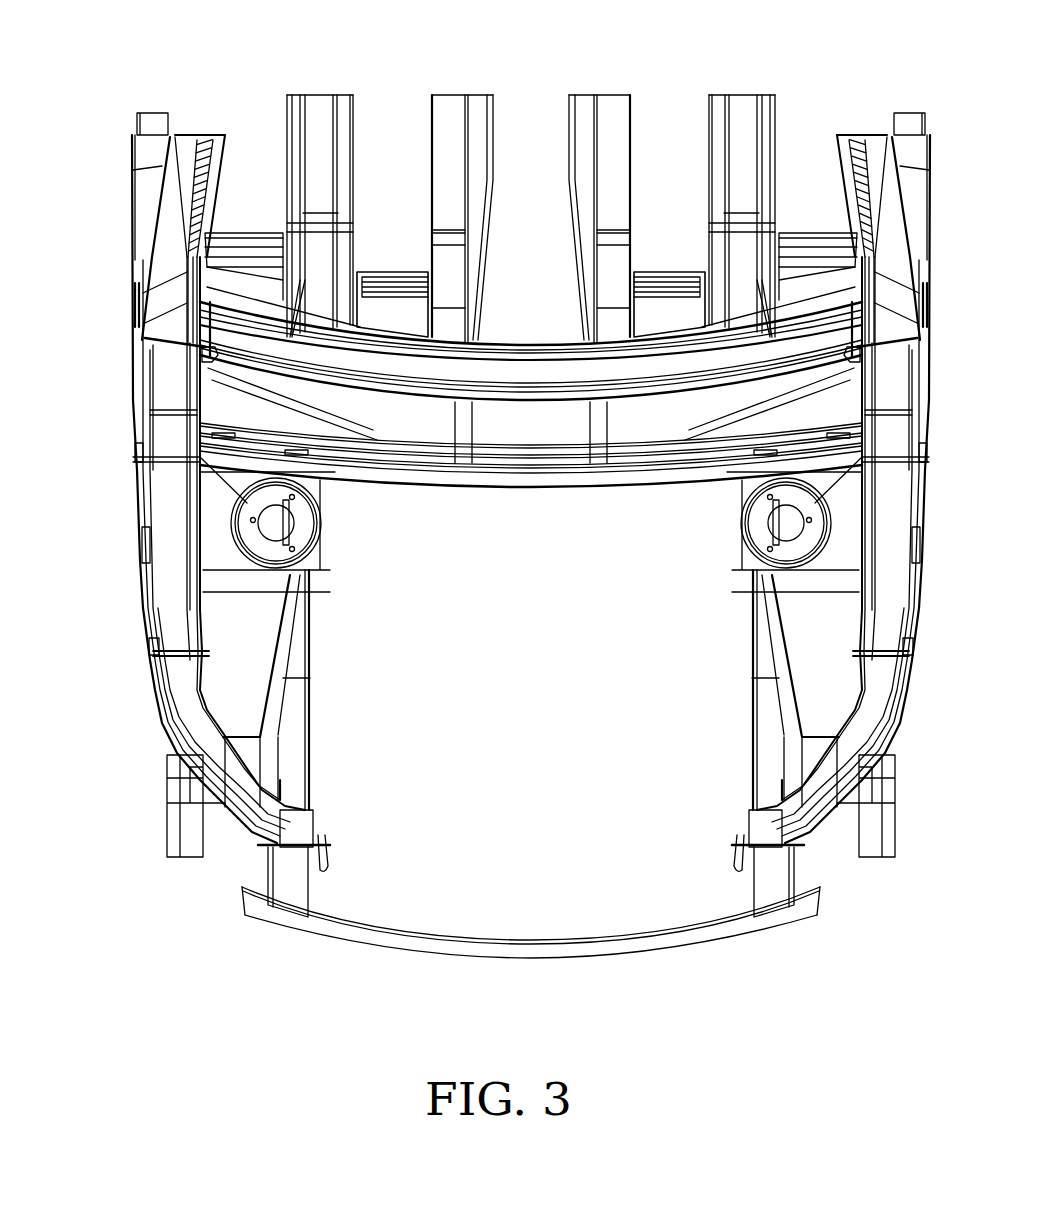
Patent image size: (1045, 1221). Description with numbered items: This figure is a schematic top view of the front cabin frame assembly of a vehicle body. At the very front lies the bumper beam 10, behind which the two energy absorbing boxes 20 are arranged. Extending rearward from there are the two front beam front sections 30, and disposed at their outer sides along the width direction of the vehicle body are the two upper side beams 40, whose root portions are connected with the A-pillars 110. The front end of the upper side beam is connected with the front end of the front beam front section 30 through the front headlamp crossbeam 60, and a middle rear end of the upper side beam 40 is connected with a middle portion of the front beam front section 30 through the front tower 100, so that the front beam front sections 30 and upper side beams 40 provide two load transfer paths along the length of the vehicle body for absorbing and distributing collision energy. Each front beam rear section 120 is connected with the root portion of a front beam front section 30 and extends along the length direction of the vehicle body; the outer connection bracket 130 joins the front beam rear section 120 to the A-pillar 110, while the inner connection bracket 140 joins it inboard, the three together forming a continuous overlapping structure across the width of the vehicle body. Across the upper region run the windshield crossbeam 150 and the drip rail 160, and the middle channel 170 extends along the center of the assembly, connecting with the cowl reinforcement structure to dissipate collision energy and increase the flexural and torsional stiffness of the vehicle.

The bumper beam 10 is at (508, 940).
The energy absorbing box 20 is at (283, 885).
The front beam front section 30 is at (277, 700).
The upper side beam 40 is at (172, 580).
The front headlamp crossbeam 60 is at (228, 787).
The front tower 100 is at (250, 527).
The A-pillar 110 is at (143, 150).
The front beam rear section 120 is at (313, 113).
The outer connection bracket 130 is at (263, 273).
The inner connection bracket 140 is at (383, 307).
The windshield crossbeam 150 is at (652, 355).
The drip rail 160 is at (527, 420).
The middle channel 170 is at (477, 113).